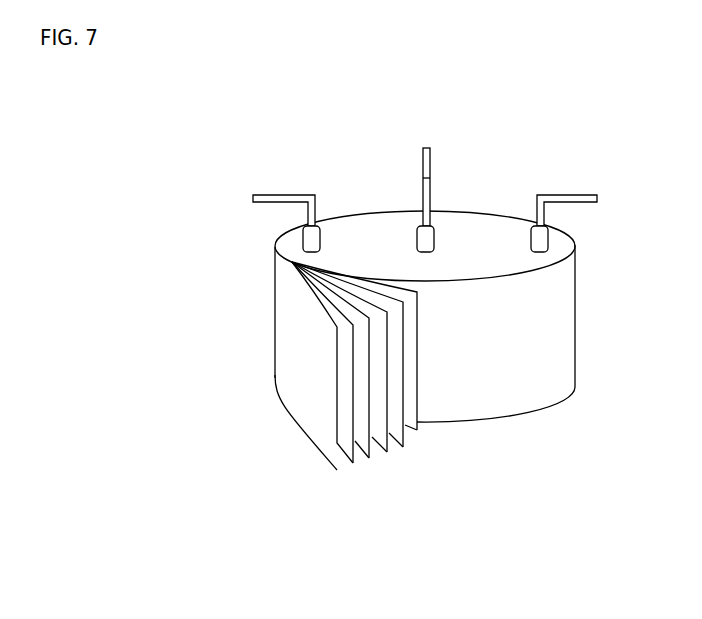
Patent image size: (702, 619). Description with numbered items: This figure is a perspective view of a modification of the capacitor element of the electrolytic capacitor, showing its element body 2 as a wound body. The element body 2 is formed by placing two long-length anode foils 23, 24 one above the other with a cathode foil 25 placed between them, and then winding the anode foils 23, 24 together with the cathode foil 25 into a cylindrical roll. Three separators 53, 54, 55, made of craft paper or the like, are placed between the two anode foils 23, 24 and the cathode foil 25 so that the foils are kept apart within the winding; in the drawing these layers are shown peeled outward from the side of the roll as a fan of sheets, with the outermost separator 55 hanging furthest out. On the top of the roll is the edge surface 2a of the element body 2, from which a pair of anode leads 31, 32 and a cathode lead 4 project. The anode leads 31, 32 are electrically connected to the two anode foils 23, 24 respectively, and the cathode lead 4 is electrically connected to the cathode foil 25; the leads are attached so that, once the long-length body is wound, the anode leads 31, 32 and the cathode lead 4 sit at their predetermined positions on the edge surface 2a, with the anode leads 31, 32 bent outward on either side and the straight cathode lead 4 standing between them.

The element body 2 is at (563, 327).
The edge surface 2a is at (500, 262).
The cathode lead 4 is at (428, 178).
The anode lead 31 is at (284, 198).
The anode lead 32 is at (570, 196).
The anode foil 23 is at (410, 437).
The anode foil 24 is at (350, 450).
The cathode foil 25 is at (375, 450).
The separator 53 is at (393, 443).
The separator 54 is at (362, 453).
The separator 55 is at (314, 427).